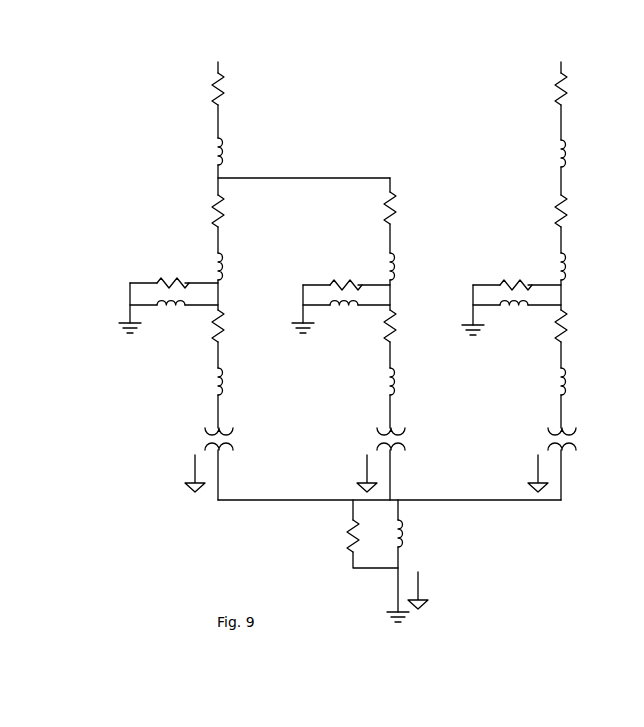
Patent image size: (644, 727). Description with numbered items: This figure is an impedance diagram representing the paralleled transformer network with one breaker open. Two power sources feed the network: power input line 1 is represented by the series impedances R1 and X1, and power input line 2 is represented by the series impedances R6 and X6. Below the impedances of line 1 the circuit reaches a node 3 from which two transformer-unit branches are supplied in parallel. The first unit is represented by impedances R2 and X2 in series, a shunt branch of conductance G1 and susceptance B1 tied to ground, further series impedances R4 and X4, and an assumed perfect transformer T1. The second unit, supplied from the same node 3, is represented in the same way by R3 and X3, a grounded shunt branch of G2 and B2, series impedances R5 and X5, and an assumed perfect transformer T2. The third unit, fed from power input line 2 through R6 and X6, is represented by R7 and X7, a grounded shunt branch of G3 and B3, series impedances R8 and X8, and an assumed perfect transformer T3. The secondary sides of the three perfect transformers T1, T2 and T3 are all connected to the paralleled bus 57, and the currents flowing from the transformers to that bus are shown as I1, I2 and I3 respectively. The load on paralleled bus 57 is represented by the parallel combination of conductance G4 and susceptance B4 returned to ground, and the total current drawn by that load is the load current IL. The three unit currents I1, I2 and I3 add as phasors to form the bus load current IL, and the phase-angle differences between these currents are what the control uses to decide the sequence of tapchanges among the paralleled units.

The power input line 1 is at (218, 62).
The power input line 2 is at (561, 62).
The common node 3 is at (308, 178).
The paralleled bus 57 is at (258, 503).
The impedance R1 is at (234, 89).
The impedance R2 is at (234, 211).
The impedance R3 is at (405, 201).
The impedance R4 is at (234, 326).
The impedance R5 is at (405, 326).
The impedance R6 is at (577, 89).
The impedance R7 is at (577, 211).
The impedance R8 is at (577, 326).
The impedance X1 is at (237, 151).
The impedance X2 is at (237, 266).
The impedance X3 is at (408, 266).
The impedance X4 is at (237, 381).
The impedance X5 is at (408, 381).
The impedance X6 is at (580, 153).
The impedance X7 is at (580, 266).
The impedance X8 is at (580, 381).
The impedance G1 is at (174, 274).
The impedance G2 is at (346, 275).
The impedance G3 is at (517, 275).
The impedance G4 is at (358, 534).
The impedance B1 is at (174, 316).
The impedance B2 is at (346, 316).
The impedance B3 is at (517, 316).
The impedance B4 is at (414, 556).
The perfect transformer T1 is at (231, 439).
The perfect transformer T2 is at (402, 439).
The perfect transformer T3 is at (573, 439).
The current I1 is at (192, 473).
The current I2 is at (363, 473).
The current I3 is at (534, 473).
The load current IL is at (423, 590).